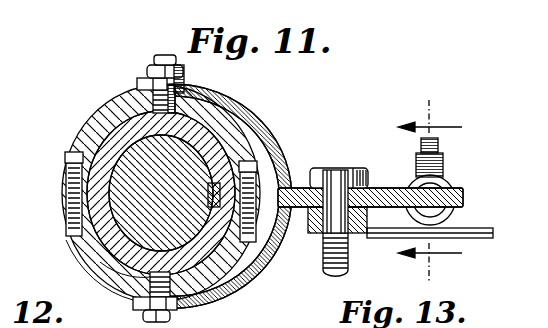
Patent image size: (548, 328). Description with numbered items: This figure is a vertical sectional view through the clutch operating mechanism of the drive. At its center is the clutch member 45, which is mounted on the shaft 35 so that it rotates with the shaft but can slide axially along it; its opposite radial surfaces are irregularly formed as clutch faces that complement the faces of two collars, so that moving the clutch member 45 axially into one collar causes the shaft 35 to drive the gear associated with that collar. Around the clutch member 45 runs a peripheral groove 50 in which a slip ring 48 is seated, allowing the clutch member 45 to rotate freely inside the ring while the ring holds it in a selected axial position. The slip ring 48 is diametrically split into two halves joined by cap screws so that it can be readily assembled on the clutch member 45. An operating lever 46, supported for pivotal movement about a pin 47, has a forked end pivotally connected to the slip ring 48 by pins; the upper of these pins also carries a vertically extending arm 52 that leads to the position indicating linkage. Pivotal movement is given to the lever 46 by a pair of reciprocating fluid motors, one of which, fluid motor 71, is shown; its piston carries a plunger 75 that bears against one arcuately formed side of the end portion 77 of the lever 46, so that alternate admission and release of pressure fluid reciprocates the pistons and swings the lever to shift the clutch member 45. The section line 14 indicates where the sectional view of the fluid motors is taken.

The section line 14- 14 is at (446, 191).
The shaft 35 is at (224, 137).
The clutch member 45 is at (122, 139).
The operating lever 46 is at (380, 189).
The pin 47 is at (327, 227).
The slip ring 48 is at (120, 111).
The peripheral groove 50 is at (119, 249).
The arm 52 is at (183, 66).
The fluid motor 71 is at (441, 178).
The plunger 75 is at (436, 210).
The end portion 77 is at (418, 189).